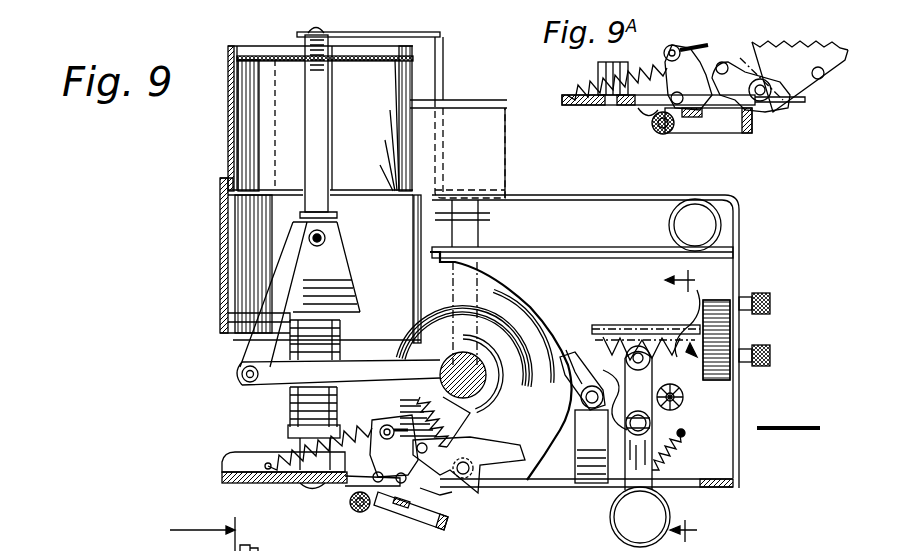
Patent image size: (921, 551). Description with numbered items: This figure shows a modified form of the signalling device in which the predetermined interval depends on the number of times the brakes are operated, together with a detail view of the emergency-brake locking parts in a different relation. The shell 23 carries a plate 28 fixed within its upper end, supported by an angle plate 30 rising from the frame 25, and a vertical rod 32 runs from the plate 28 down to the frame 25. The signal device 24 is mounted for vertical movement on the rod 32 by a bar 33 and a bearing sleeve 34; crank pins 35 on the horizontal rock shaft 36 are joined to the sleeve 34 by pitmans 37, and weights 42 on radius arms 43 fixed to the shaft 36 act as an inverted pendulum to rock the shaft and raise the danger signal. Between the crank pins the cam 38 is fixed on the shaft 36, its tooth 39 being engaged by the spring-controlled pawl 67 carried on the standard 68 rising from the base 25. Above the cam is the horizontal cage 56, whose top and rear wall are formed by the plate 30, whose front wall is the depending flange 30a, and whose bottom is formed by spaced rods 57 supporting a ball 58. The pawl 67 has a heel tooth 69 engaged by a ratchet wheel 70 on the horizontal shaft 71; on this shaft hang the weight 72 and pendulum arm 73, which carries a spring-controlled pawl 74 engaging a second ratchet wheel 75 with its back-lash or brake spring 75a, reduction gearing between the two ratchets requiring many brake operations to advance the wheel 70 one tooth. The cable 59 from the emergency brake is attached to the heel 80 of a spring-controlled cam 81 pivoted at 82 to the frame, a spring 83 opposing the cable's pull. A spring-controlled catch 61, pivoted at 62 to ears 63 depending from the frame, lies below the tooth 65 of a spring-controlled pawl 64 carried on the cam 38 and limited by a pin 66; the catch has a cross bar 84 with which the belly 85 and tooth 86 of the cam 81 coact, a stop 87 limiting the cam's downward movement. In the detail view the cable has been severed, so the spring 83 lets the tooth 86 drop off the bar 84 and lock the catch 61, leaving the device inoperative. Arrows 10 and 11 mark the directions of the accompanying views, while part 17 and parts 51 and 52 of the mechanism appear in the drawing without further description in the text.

In FIG. 9, the direction arrow 10 is at (696, 403).
In FIG. 9, the dimension line 11 is at (202, 532).
In FIG. 9, the base plate 17 is at (683, 483).
In FIG. 9, the shell 23 is at (228, 128).
In FIG. 9, the signal device 24 is at (220, 242).
In FIG. 9, the frame 25 is at (233, 460).
In FIG. 9, the plate 28 is at (387, 34).
In FIG. 9, the angle plate 30 is at (560, 195).
In FIG. 9, the depending flange 30a is at (453, 197).
In FIG. 9, the vertical rod 32 is at (325, 104).
In FIG. 9, the bar 33 is at (228, 316).
In FIG. 9, the bearing sleeve 34 is at (335, 215).
In FIG. 9, the crank pins 35 is at (270, 368).
In FIG. 9, the rock shaft 36 is at (470, 358).
In FIG. 9, the pitmans 37 is at (262, 348).
In FIG. 9, the cam 38 is at (530, 305).
In FIG. 9A, the cam 38 is at (772, 50).
In FIG. 9, the tooth 39 is at (567, 347).
In FIG. 9, the weights 42 is at (492, 100).
In FIG. 9, the radius arms 43 is at (480, 230).
In FIG. 9, the gear 51 is at (675, 370).
In FIG. 9, the toothed member 52 is at (603, 333).
In FIG. 9, the cage 56 is at (612, 232).
In FIG. 9, the rods 57 is at (642, 258).
In FIG. 9, the ball 58 is at (722, 222).
In FIG. 9, the cable 59 is at (397, 430).
In FIG. 9A, the cable 59 is at (672, 45).
In FIG. 9, the catch 61 is at (430, 530).
In FIG. 9A, the catch 61 is at (737, 133).
In FIG. 9, the pivot 62 is at (360, 507).
In FIG. 9A, the pivot 62 is at (668, 132).
In FIG. 9, the ears 63 is at (347, 490).
In FIG. 9A, the ears 63 is at (652, 115).
In FIG. 9, the pawl 64 is at (480, 452).
In FIG. 9A, the pawl 64 is at (783, 72).
In FIG. 9, the tooth 65 is at (475, 492).
In FIG. 9A, the tooth 65 is at (787, 110).
In FIG. 9, the pin 66 is at (578, 458).
In FIG. 9A, the pin 66 is at (820, 80).
In FIG. 9, the pawl 67 is at (567, 383).
In FIG. 9, the standard 68 is at (573, 467).
In FIG. 9, the heel tooth 69 is at (663, 439).
In FIG. 9, the ratchet wheel 70 is at (356, 542).
In FIG. 9, the shaft 71 is at (731, 350).
In FIG. 9, the weight 72 is at (640, 517).
In FIG. 9, the pendulum arm 73 is at (628, 470).
In FIG. 9, the pawl 74 is at (600, 447).
In FIG. 9, the ratchet wheel 75 is at (630, 322).
In FIG. 9, the brake spring 75a is at (690, 322).
In FIG. 9, the heel 80 is at (387, 432).
In FIG. 9A, the heel 80 is at (665, 52).
In FIG. 9, the cam 81 is at (394, 446).
In FIG. 9A, the cam 81 is at (688, 77).
In FIG. 9, the pivot 82 is at (373, 475).
In FIG. 9A, the pivot 82 is at (613, 107).
In FIG. 9, the spring 83 is at (275, 468).
In FIG. 9A, the spring 83 is at (578, 97).
In FIG. 9, the cross bar 84 is at (385, 505).
In FIG. 9A, the cross bar 84 is at (697, 83).
In FIG. 9, the belly 85 is at (410, 497).
In FIG. 9A, the belly 85 is at (747, 108).
In FIG. 9, the tooth 86 is at (404, 478).
In FIG. 9A, the tooth 86 is at (717, 127).
In FIG. 9, the stop 87 is at (460, 475).
In FIG. 9A, the stop 87 is at (733, 80).